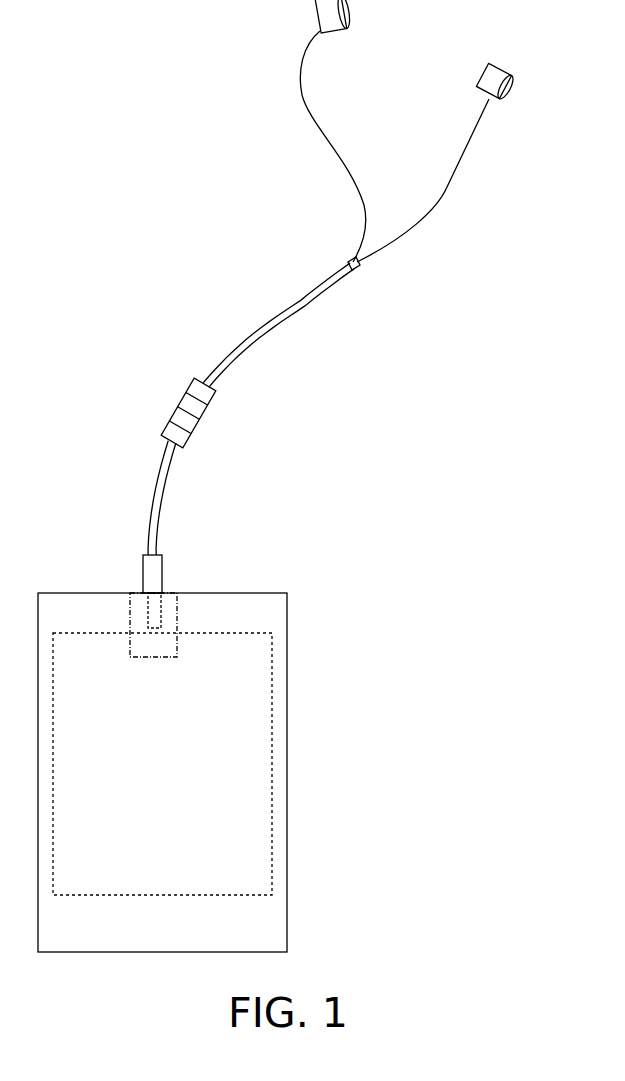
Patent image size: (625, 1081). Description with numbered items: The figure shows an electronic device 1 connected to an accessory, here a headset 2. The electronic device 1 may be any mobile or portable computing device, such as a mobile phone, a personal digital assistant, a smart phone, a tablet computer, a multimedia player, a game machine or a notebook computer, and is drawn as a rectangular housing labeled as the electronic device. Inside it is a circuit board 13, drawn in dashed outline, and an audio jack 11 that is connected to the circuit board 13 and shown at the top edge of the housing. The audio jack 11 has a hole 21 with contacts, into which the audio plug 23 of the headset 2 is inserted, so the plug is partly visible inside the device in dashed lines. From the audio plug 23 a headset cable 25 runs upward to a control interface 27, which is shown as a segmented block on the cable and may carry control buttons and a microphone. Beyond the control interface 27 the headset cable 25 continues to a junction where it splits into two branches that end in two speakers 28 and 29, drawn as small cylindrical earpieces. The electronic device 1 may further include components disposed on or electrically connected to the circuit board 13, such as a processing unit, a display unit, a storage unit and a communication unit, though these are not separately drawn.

The electronic device 1 is at (288, 724).
The audio jack 11 is at (177, 607).
The circuit board 13 is at (274, 686).
The headset 2 is at (323, 277).
The hole 21 is at (147, 607).
The audio plug 23 is at (143, 575).
The headset cable 25 is at (158, 482).
The control interface 27 is at (213, 397).
The speaker 28 is at (317, 15).
The speaker 29 is at (512, 88).